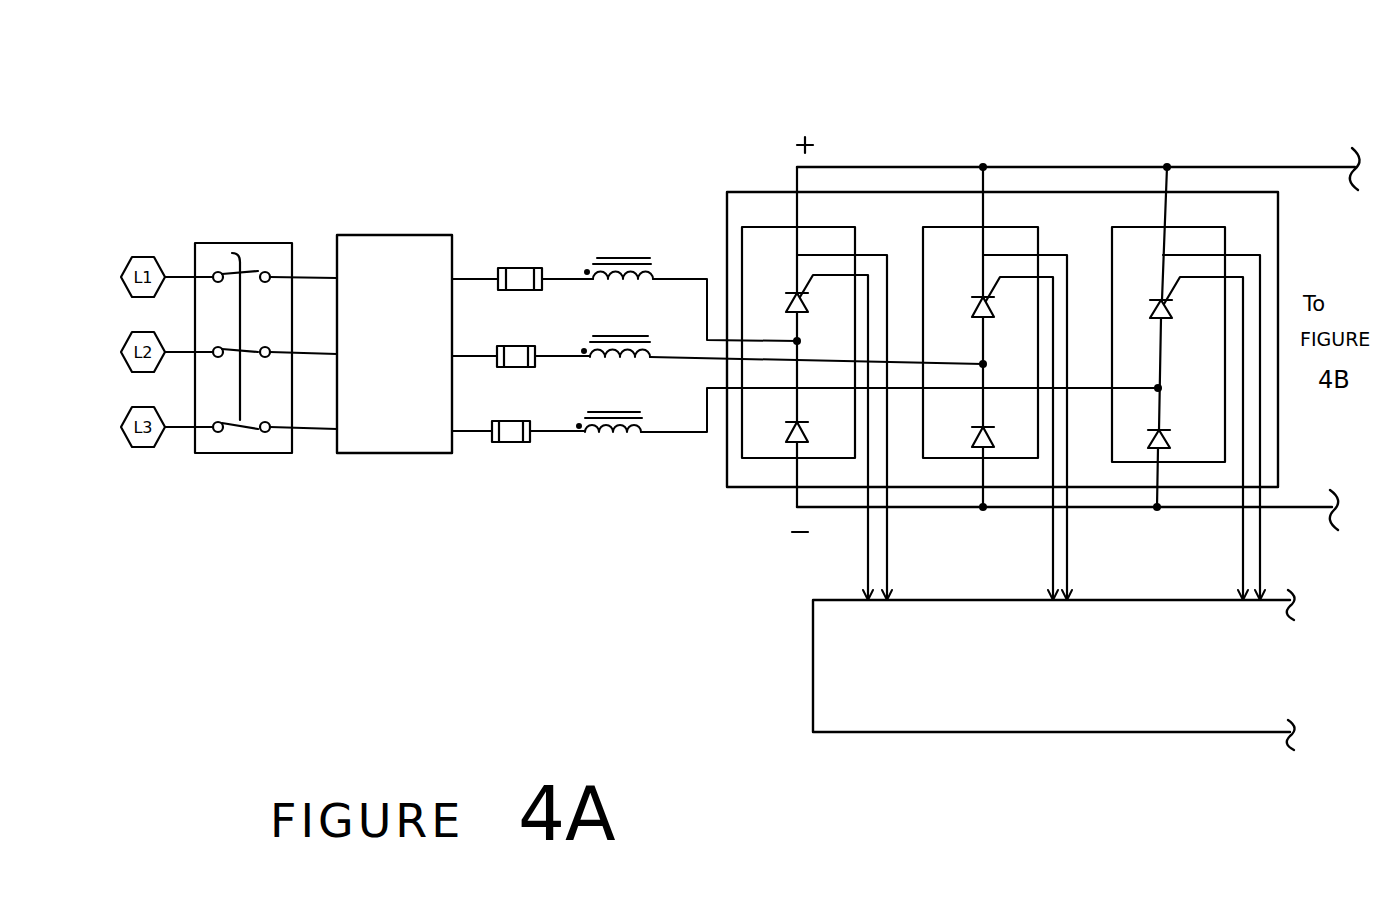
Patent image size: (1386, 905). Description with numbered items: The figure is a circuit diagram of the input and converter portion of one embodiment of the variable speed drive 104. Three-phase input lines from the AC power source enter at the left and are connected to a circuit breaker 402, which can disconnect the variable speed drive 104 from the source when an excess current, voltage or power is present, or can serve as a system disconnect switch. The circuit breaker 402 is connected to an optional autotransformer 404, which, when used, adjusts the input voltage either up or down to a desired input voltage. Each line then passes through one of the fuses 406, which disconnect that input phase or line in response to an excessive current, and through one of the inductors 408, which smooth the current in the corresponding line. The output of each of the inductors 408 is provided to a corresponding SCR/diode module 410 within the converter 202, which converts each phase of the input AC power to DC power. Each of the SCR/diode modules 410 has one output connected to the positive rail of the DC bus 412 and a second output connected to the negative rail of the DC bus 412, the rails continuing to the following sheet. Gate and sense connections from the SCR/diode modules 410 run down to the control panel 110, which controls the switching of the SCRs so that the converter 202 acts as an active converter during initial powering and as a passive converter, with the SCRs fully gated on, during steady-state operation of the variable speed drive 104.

The circuit breaker 402 is at (258, 453).
The autotransformer 404 is at (413, 453).
The fuses 406 is at (518, 443).
The inductors 408 is at (630, 440).
The variable speed drive 104 is at (652, 566).
The converter 202 is at (903, 224).
The DC bus 412 is at (1048, 165).
The SCR/diode module 410 is at (1225, 229).
The control panel 110 is at (877, 733).